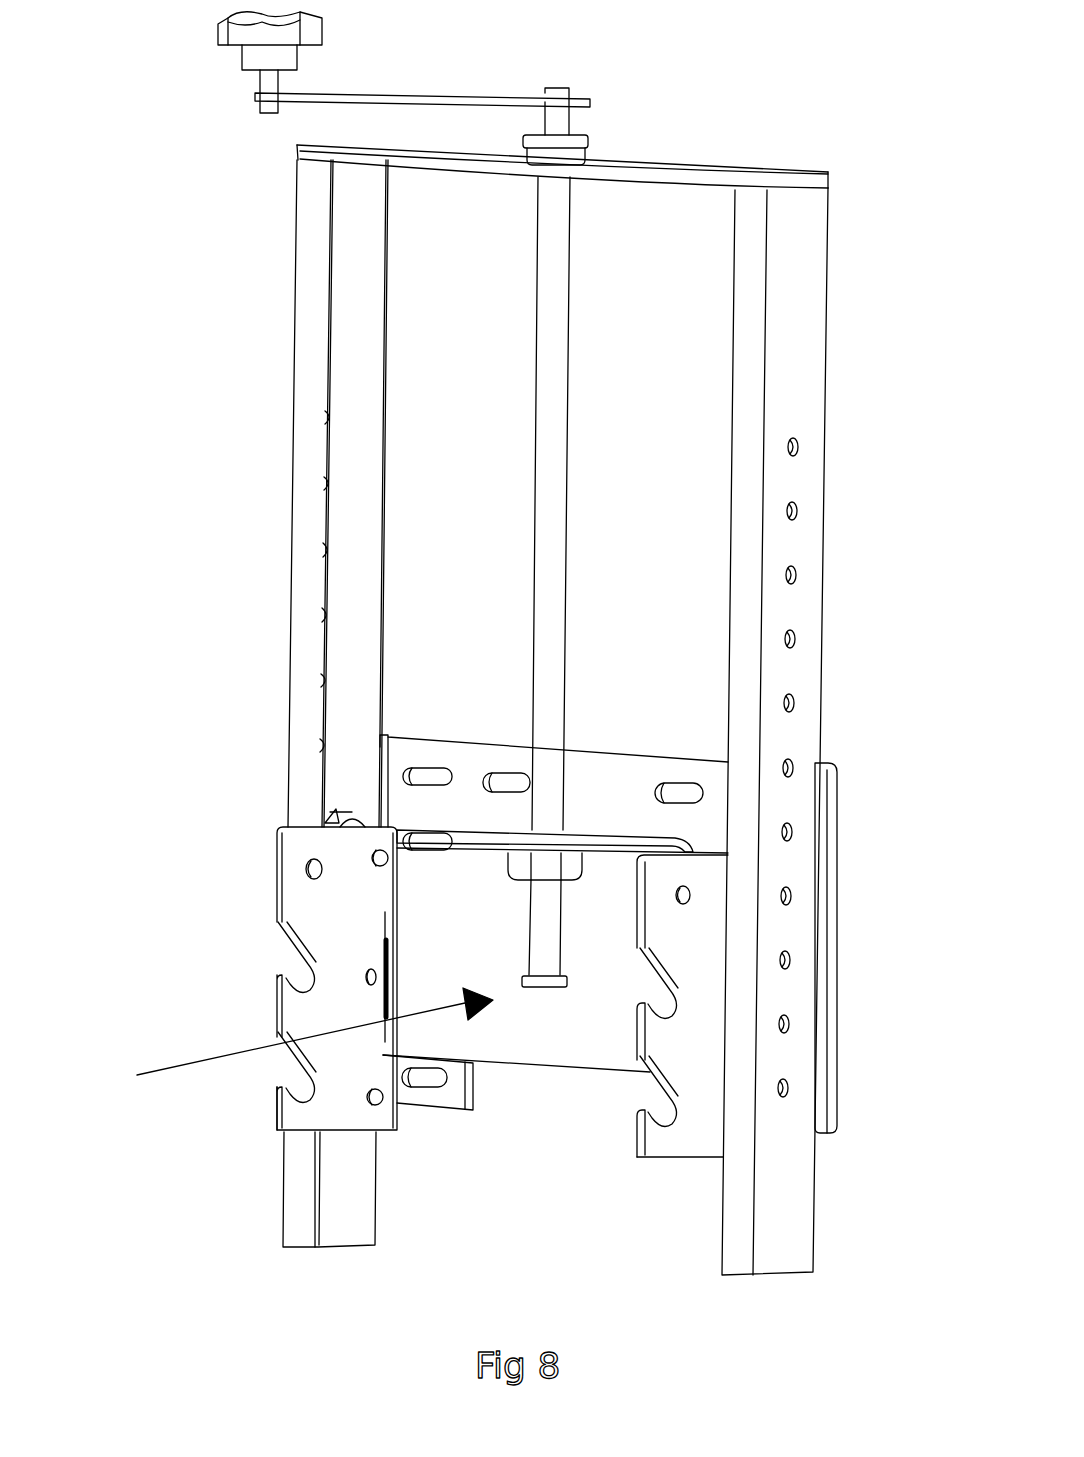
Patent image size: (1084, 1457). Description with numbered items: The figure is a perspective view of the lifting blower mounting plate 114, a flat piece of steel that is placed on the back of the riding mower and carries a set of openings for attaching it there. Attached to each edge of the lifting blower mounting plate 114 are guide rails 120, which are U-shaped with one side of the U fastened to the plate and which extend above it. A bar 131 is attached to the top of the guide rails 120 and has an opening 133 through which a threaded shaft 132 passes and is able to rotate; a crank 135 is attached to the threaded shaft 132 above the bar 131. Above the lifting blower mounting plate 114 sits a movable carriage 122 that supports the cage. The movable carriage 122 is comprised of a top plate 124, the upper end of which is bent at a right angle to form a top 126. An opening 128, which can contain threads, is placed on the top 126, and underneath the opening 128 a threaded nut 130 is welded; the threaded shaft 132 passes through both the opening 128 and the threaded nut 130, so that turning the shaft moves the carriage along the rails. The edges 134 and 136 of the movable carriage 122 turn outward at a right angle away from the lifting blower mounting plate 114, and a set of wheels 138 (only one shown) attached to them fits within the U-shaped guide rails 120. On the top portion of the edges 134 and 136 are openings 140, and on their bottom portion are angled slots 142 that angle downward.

The lifting blower mounting plate 114 is at (398, 750).
The guide rails 120 is at (305, 497).
The movable carriage 122 is at (278, 1038).
The top plate 124 is at (490, 837).
The top 126 is at (583, 836).
The opening 128 is at (337, 820).
The threaded nut 130 is at (547, 862).
The bar 131 is at (660, 165).
The threaded shaft 132 is at (560, 370).
The opening 133 is at (537, 173).
The edge 134 is at (285, 1112).
The crank 135 is at (345, 103).
The edge 136 is at (715, 1140).
The wheels 138 is at (328, 813).
The openings 140 is at (313, 868).
The angled slots 142 is at (283, 983).